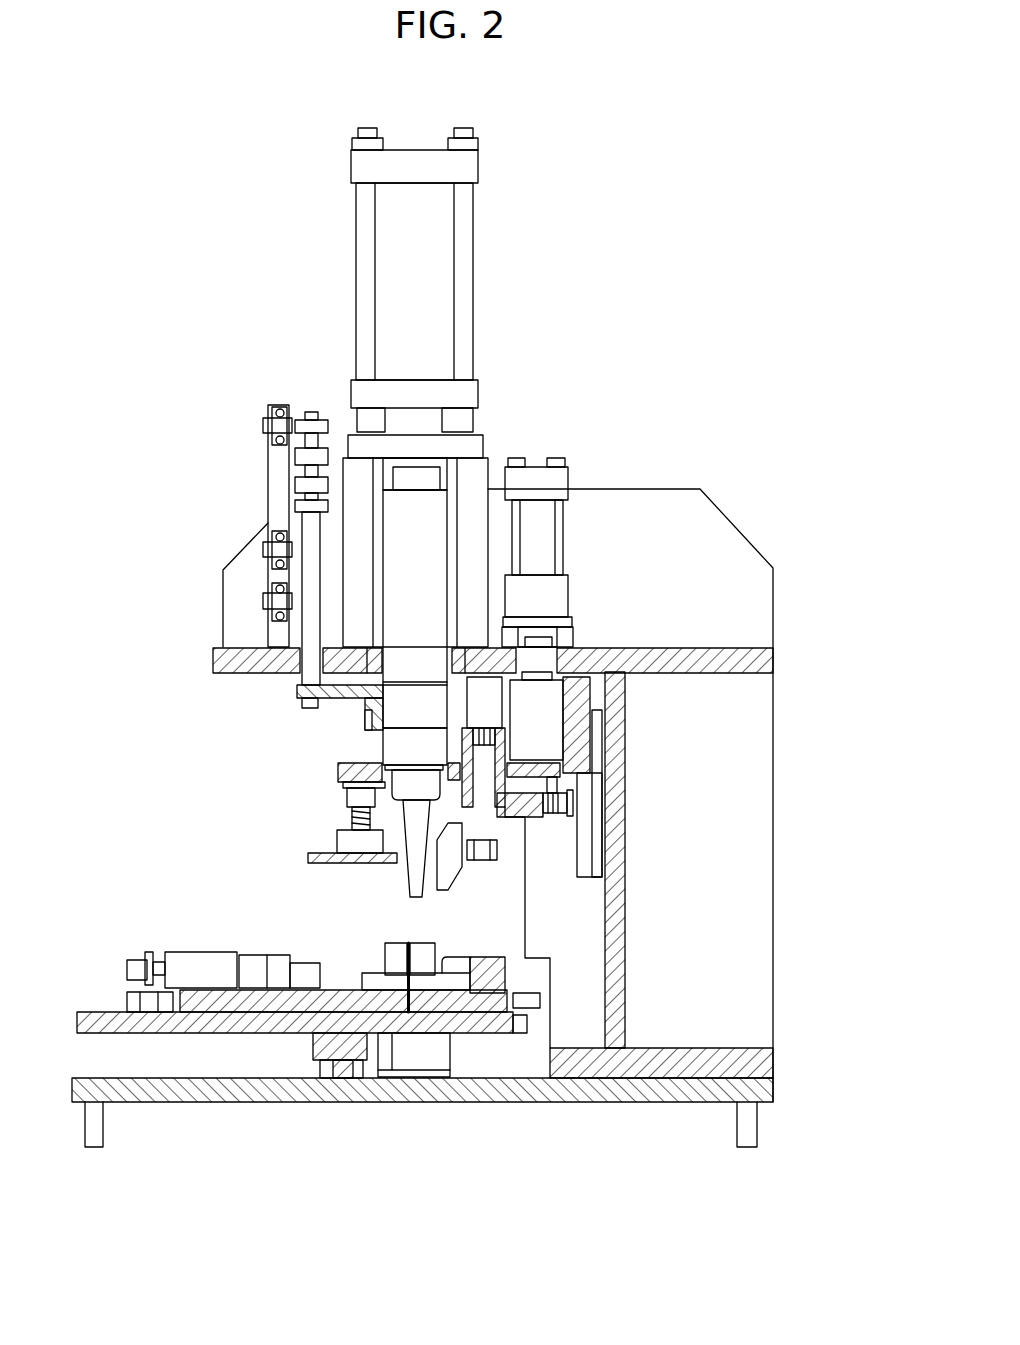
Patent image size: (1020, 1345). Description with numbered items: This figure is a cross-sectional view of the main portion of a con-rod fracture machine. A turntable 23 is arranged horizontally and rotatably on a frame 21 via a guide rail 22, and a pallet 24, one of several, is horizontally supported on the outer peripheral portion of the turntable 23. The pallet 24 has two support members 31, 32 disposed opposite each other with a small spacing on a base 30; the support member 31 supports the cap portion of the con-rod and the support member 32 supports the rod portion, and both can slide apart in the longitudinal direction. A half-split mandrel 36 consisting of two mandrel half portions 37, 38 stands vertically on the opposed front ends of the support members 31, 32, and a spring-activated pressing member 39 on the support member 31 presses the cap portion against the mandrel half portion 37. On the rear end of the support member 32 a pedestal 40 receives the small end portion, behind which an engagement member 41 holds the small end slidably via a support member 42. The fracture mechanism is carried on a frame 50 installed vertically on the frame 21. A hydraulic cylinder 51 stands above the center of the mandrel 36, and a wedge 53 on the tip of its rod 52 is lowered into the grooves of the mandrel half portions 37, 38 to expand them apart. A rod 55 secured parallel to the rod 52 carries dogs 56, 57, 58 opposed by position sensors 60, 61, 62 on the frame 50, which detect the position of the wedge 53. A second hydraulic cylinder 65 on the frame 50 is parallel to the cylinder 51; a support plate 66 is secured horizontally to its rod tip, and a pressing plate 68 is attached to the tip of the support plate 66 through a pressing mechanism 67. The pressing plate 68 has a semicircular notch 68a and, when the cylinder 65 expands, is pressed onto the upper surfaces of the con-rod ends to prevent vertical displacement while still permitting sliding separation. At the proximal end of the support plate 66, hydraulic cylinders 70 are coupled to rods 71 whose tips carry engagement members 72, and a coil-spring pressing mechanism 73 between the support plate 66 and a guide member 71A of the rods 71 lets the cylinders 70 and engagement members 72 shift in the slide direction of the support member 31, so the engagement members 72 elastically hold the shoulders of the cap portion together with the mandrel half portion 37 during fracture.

The frame 21 is at (651, 1097).
The guide rail 22 is at (340, 1062).
The turntable 23 is at (95, 1020).
The pallet 24 is at (182, 952).
The base 30 is at (203, 1025).
The support member 31 is at (483, 1008).
The support member 32 is at (272, 1008).
The mandrel 36 is at (416, 1067).
The mandrel half portion 37 is at (422, 960).
The mandrel half portion 38 is at (395, 960).
The pressing member 39 is at (452, 955).
The pedestal 40 is at (303, 972).
The engagement member 41 is at (252, 963).
The support member 42 is at (217, 960).
The frame 50 is at (712, 500).
The hydraulic cylinder 51 is at (478, 222).
The rod 52 is at (422, 478).
The wedge 53 is at (410, 878).
The rod 55 is at (308, 522).
The dog 56 is at (305, 418).
The dog 57 is at (297, 457).
The dog 58 is at (300, 485).
The position sensor 60 is at (265, 423).
The position sensor 61 is at (263, 548).
The position sensor 62 is at (263, 600).
The hydraulic cylinder 65 is at (540, 530).
The support plate 66 is at (338, 768).
The pressing mechanism 67 is at (350, 815).
The pressing plate 68 is at (322, 854).
The semicircular notch 68a is at (395, 862).
The hydraulic cylinder 70 is at (490, 703).
The rod 71 is at (483, 760).
The guide member 71A is at (506, 838).
The engagement member 72 is at (448, 890).
The pressing mechanism 73 is at (560, 803).